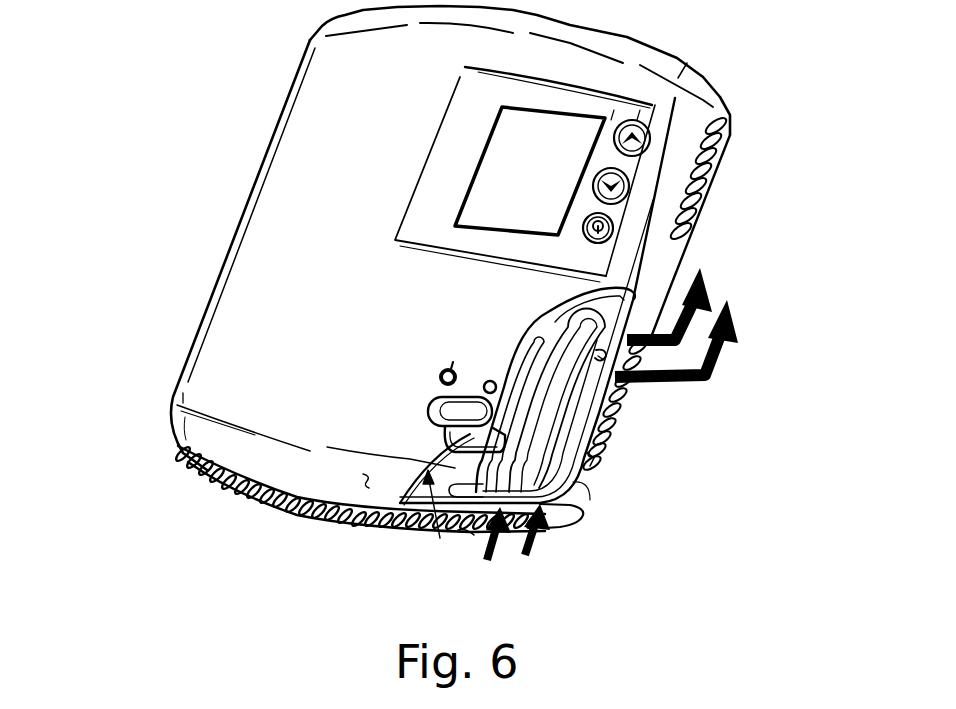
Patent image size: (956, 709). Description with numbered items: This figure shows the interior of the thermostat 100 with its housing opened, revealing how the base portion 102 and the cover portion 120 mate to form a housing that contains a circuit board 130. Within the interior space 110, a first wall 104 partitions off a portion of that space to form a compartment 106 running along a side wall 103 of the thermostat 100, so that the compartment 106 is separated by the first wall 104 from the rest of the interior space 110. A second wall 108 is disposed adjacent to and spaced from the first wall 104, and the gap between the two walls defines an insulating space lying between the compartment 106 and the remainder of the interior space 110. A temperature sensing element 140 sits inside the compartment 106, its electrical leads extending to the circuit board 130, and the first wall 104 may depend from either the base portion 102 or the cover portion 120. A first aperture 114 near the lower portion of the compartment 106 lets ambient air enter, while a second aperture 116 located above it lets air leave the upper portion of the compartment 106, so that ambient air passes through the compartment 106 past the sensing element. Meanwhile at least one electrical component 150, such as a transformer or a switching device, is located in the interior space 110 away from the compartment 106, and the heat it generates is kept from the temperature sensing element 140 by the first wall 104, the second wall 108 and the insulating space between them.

The thermostat 100 is at (212, 158).
The base portion 102 is at (363, 528).
The side wall 103 is at (673, 260).
The first wall 104 is at (588, 483).
The compartment 106 is at (597, 518).
The second wall 108 is at (465, 536).
The interior space 110 is at (443, 543).
The first aperture 114 is at (550, 532).
The second aperture 116 is at (620, 380).
The cover portion 120 is at (363, 474).
The circuit board 130 is at (617, 310).
The temperature sensing element 140 is at (595, 457).
The electrical component 150 is at (520, 360).